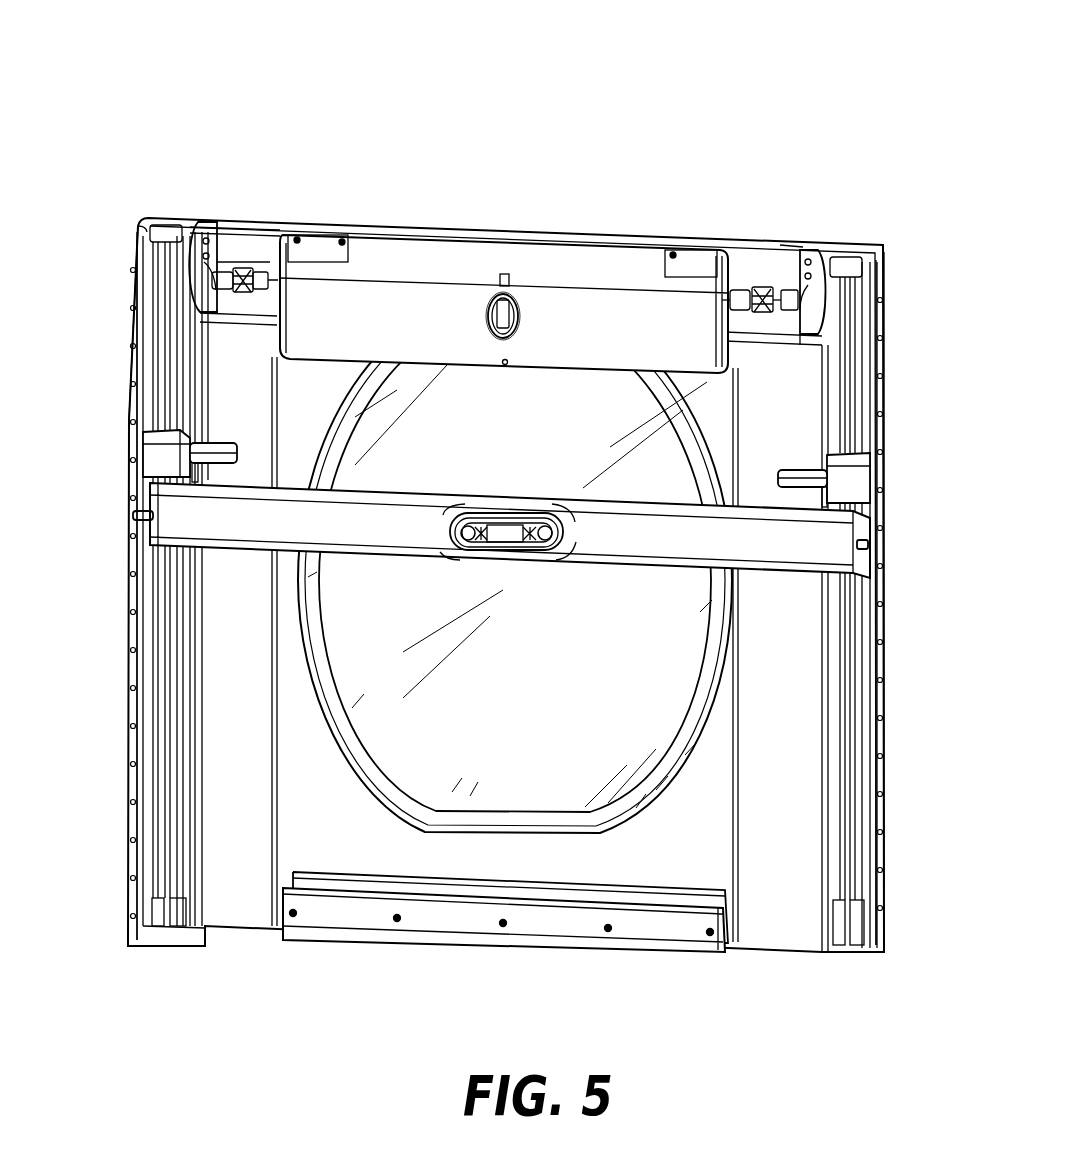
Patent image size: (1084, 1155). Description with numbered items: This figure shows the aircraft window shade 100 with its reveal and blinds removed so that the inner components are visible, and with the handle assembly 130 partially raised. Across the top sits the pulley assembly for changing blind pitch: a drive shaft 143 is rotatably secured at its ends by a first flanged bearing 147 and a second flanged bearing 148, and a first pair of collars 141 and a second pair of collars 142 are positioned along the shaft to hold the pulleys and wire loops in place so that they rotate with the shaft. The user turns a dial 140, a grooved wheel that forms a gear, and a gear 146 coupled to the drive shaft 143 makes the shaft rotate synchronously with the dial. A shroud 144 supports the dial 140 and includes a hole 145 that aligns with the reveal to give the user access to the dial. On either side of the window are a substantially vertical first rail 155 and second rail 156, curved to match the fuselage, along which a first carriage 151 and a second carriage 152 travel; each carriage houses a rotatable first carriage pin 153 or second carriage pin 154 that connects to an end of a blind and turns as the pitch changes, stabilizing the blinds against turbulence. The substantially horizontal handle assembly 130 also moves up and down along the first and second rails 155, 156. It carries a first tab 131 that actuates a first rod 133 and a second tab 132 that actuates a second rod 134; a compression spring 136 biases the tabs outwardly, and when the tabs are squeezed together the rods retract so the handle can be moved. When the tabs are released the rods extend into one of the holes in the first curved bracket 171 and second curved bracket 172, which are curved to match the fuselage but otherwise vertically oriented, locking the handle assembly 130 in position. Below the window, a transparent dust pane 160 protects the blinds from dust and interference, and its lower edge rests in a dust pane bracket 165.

The aircraft window shade 100 is at (245, 77).
The handle assembly 130 is at (843, 562).
The first tab 131 is at (460, 536).
The second tab 132 is at (550, 538).
The first rod 133 is at (140, 512).
The second rod 134 is at (873, 543).
The compression spring 136 is at (532, 540).
The dial 140 is at (500, 298).
The first pair of collars 141 is at (258, 270).
The second pair of collars 142 is at (760, 290).
The drive shaft 143 is at (788, 286).
The shroud 144 is at (596, 305).
The hole 145 is at (485, 318).
The gear 146 is at (504, 280).
The first flanged bearing 147 is at (198, 236).
The second flanged bearing 148 is at (803, 256).
The first carriage 151 is at (152, 440).
The second carriage 152 is at (873, 467).
The first carriage pin 153 is at (227, 448).
The second carriage pin 154 is at (795, 467).
The first rail 155 is at (172, 672).
The second rail 156 is at (855, 770).
The dust pane 160 is at (328, 850).
The dust pane bracket 165 is at (678, 920).
The first curved bracket 171 is at (128, 282).
The second curved bracket 172 is at (873, 327).